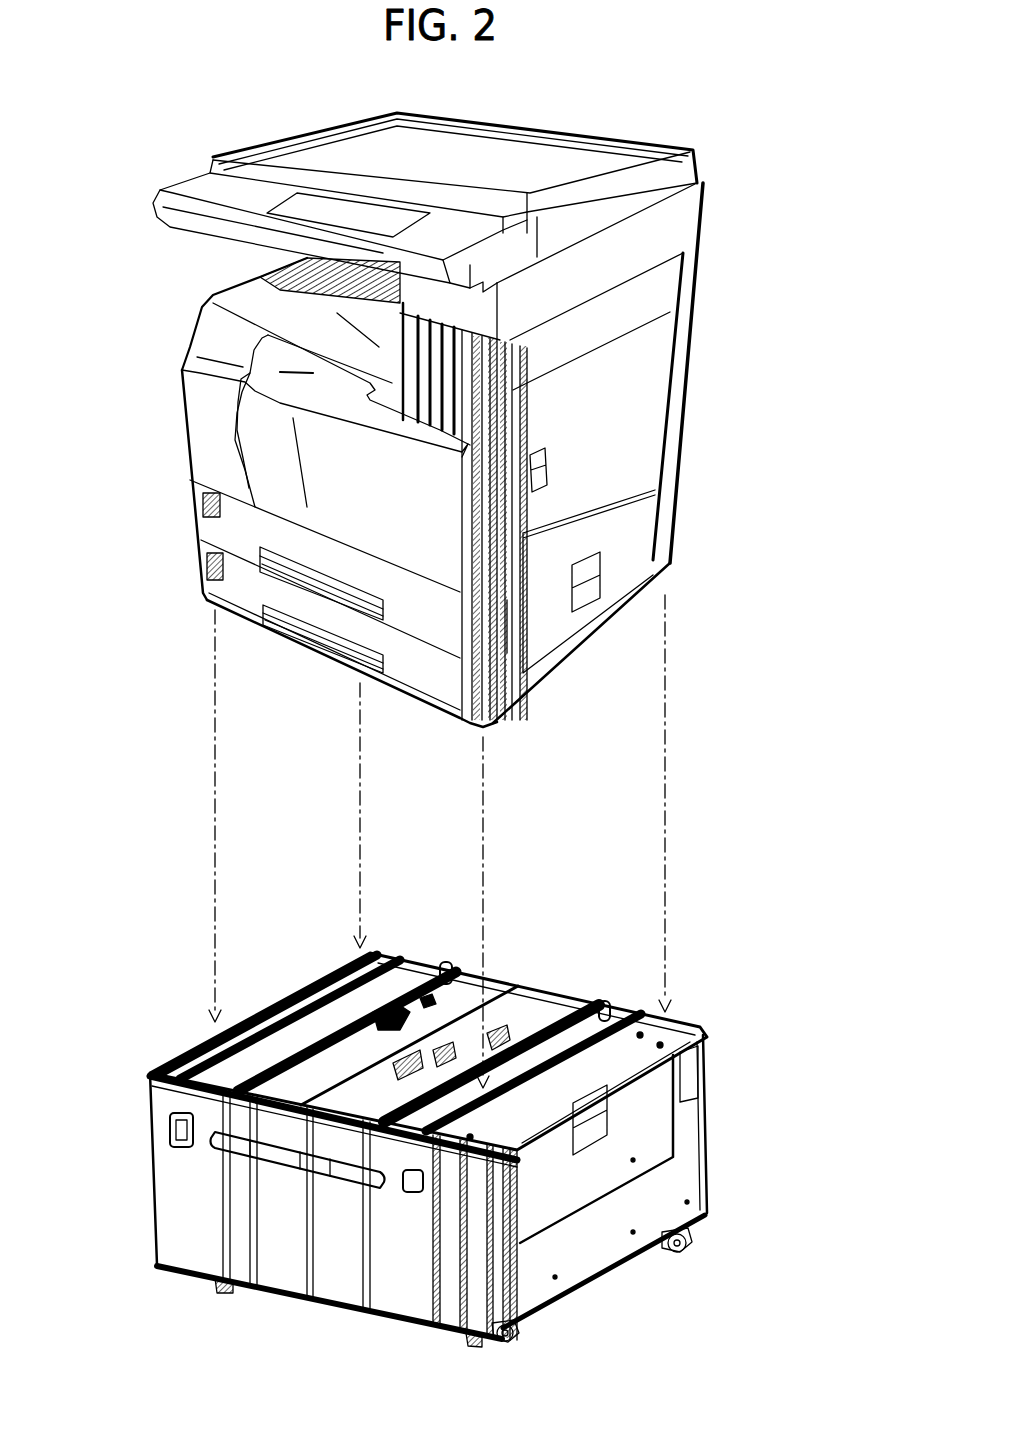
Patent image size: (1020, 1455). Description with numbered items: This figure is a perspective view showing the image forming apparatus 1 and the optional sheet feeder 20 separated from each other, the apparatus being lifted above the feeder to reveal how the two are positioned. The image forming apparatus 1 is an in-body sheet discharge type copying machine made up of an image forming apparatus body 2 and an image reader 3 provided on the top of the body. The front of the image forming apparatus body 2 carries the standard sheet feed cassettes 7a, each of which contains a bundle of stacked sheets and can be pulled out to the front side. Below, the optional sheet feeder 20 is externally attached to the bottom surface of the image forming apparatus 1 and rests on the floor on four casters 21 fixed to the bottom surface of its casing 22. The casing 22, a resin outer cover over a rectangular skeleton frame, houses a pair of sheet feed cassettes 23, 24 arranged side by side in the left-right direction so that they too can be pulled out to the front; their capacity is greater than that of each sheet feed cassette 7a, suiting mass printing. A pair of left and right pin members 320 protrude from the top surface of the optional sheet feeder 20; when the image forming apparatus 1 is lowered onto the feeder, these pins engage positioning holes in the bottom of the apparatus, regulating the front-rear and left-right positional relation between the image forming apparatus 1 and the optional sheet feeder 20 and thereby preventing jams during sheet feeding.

The image forming apparatus 1 is at (438, 418).
The image forming apparatus body 2 is at (713, 297).
The image reader 3 is at (673, 173).
The sheet feed cassette 7a is at (238, 533).
The optional sheet feeder 20 is at (463, 1120).
The casters 21 is at (690, 1245).
The casing 22 is at (520, 983).
The sheet feed cassette 23 is at (270, 1223).
The sheet feed cassette 24 is at (397, 1260).
The pin members 320 is at (445, 965).